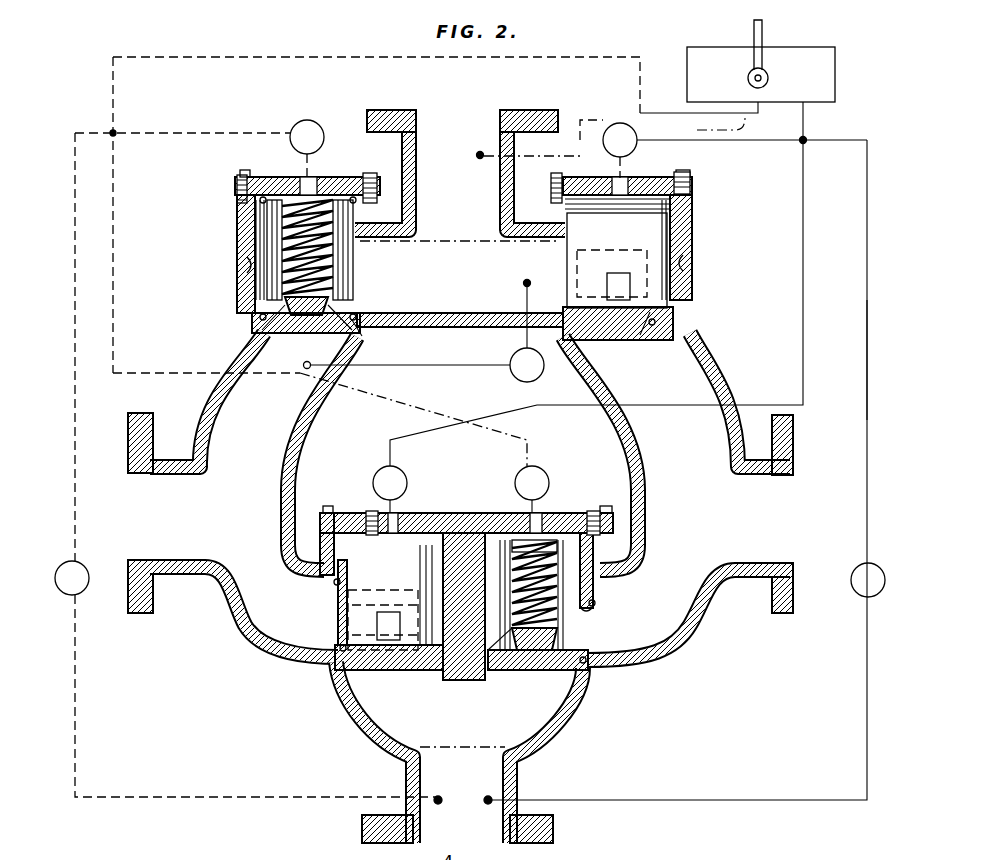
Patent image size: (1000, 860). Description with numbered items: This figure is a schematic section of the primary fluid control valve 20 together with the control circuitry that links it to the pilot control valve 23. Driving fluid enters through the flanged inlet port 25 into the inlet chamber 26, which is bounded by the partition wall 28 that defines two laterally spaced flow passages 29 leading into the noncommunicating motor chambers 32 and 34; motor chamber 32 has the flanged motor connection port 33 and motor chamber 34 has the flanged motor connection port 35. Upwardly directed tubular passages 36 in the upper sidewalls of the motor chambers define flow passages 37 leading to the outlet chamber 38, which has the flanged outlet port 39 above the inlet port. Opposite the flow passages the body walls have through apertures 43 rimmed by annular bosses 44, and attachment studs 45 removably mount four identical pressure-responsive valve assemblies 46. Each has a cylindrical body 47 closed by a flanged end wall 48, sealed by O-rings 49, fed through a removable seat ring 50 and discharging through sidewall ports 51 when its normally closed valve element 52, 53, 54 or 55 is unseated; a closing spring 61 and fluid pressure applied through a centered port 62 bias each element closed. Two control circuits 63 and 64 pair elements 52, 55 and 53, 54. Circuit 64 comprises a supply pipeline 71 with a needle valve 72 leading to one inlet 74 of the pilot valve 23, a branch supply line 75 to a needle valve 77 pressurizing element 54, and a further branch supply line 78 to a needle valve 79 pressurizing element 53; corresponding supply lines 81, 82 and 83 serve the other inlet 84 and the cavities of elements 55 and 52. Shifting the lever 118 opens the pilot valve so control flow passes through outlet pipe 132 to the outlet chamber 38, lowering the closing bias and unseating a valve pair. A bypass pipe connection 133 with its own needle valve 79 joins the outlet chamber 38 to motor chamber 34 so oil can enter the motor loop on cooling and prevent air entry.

The primary fluid control valve 20 is at (708, 365).
The pilot control valve 23 is at (840, 64).
The flanged inlet port 25 is at (553, 828).
The inlet chamber 26 is at (560, 720).
The partition wall 28 is at (462, 682).
The flow passages 29 is at (340, 672).
The motor chamber 32 is at (705, 610).
The flanged motor connection port 33 is at (793, 422).
The motor chamber 34 is at (235, 585).
The flanged motor connection port 35 is at (128, 420).
The tubular passages 36 is at (255, 340).
The flow passages 37 is at (258, 315).
The outlet chamber 38 is at (440, 300).
The flanged outlet port 39 is at (528, 112).
The through apertures 43 is at (245, 265).
The annular bosses 44 is at (237, 190).
The attachment studs 45 is at (246, 174).
The pressure-responsive valve assemblies 46 is at (300, 178).
The cylindrical body 47 is at (265, 235).
The flanged end wall 48 is at (372, 175).
The O-rings 49 is at (262, 200).
The seat ring 50 is at (357, 338).
The sidewall ports 51 is at (362, 283).
The valve element 52 is at (385, 662).
The valve element 53 is at (545, 666).
The valve element 54 is at (318, 320).
The valve element 55 is at (640, 335).
The closing spring 61 is at (292, 318).
The centered port 62 is at (312, 180).
The control circuit 63 is at (869, 393).
The control circuit 64 is at (82, 712).
The supply pipeline 71 is at (250, 56).
The needle valve 72 is at (63, 567).
The inlet 74 is at (720, 102).
The branch supply line 75 is at (185, 132).
The needle valve 77 is at (306, 120).
The branch supply line 78 is at (385, 392).
The needle valve 79 is at (512, 362).
The supply line 81 is at (867, 240).
The supply line 82 is at (762, 140).
The supply line 83 is at (803, 235).
The inlet 84 is at (808, 116).
The lever 118 is at (764, 28).
The outlet pipe 132 is at (704, 129).
The bypass pipe connection 133 is at (525, 290).